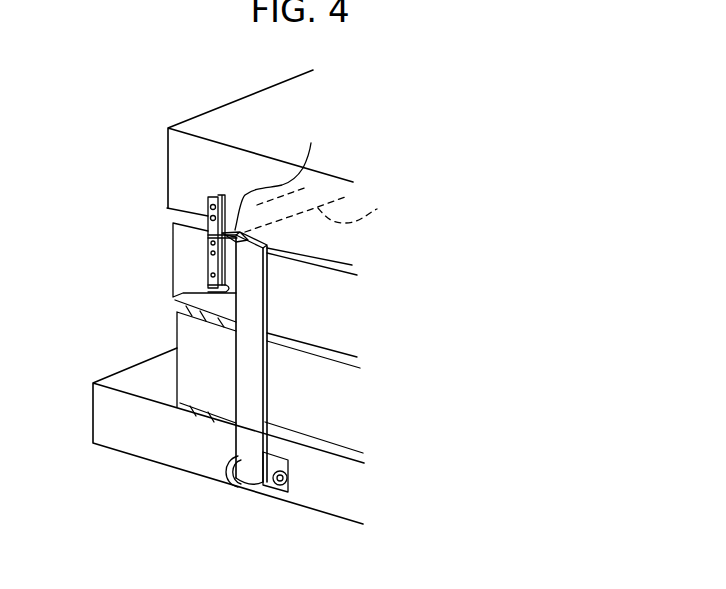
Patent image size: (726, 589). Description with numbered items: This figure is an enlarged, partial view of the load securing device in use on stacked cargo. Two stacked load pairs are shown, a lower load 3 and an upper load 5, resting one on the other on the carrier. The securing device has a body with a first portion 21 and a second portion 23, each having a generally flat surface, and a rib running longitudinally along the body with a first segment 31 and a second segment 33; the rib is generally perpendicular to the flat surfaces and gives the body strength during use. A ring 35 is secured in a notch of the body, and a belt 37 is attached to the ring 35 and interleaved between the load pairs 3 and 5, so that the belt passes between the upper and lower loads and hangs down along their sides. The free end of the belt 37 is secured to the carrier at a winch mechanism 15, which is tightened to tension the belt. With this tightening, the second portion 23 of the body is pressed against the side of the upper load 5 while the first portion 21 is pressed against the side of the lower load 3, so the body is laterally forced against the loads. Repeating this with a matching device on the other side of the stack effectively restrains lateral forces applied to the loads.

The load 3 is at (327, 320).
The load 5 is at (225, 123).
The winch mechanism 15 is at (276, 492).
The first portion 21 is at (173, 297).
The second portion 23 is at (216, 196).
The first segment 31 is at (207, 260).
The second segment 33 is at (168, 209).
The ring 35 is at (281, 175).
The belt 37 is at (168, 513).